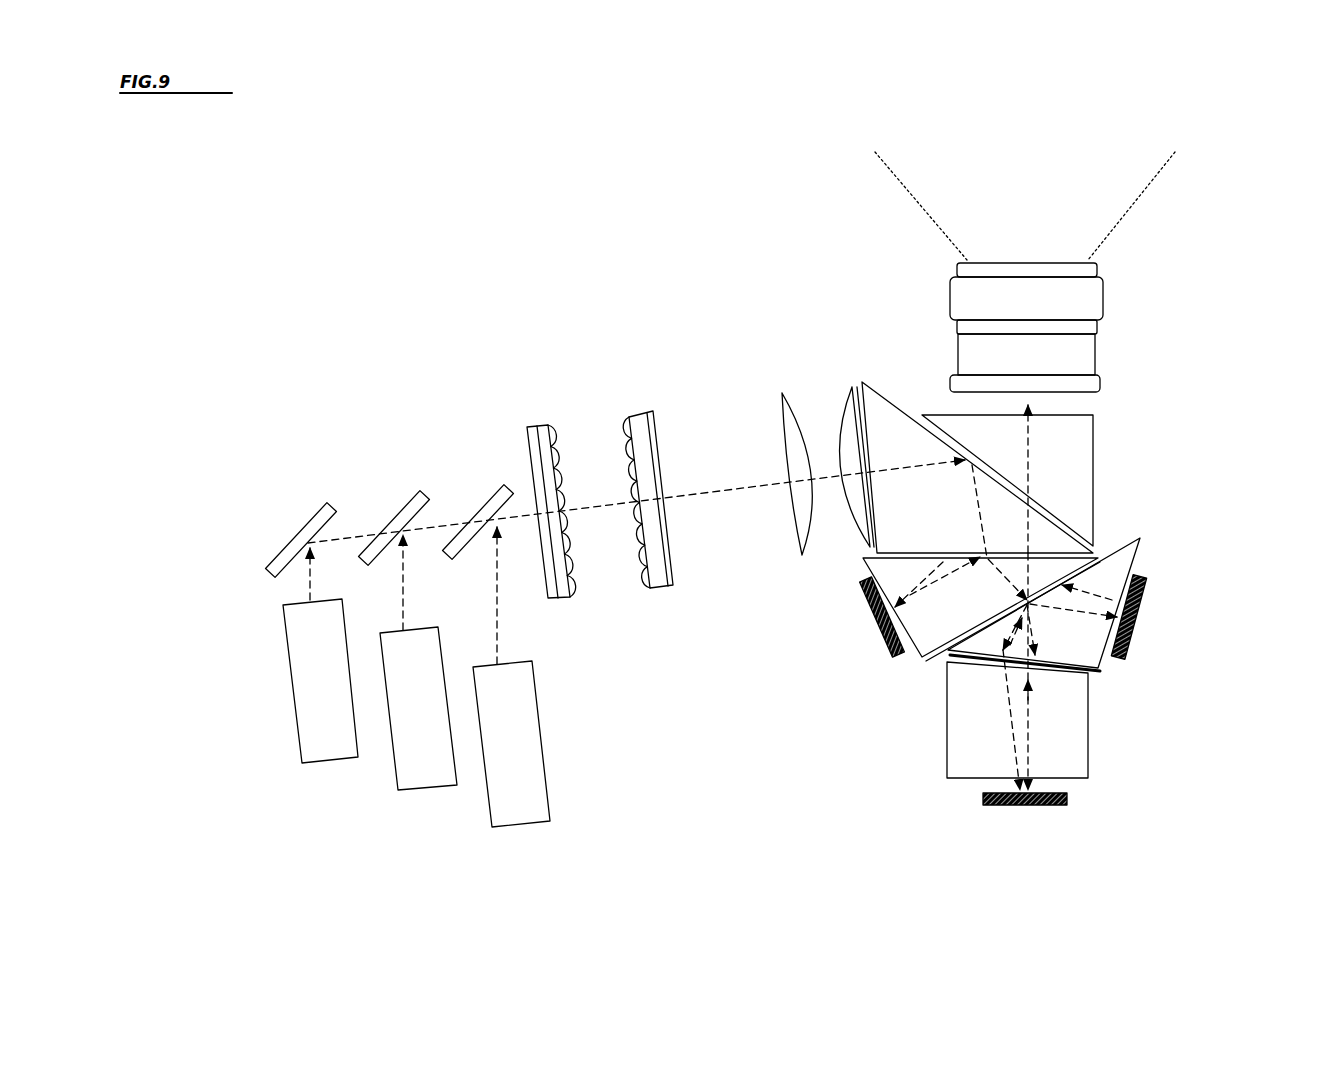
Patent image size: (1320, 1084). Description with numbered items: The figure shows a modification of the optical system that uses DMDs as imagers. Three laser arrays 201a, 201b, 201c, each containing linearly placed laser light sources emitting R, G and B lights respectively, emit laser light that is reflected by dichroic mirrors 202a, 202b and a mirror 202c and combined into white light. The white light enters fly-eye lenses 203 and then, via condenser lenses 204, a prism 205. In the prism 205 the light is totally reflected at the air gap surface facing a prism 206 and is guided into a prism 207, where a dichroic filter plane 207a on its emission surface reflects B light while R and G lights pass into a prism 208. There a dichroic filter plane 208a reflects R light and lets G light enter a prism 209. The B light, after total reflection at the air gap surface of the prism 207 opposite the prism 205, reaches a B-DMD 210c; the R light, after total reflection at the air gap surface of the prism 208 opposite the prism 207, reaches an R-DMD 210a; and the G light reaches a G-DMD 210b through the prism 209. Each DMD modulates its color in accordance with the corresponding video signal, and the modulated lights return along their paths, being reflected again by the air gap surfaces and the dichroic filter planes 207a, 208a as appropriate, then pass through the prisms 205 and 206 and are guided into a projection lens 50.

The projection lens 50 is at (1095, 298).
The laser array 201a is at (528, 815).
The laser array 201b is at (437, 782).
The laser array 201c is at (337, 757).
The dichroic mirror 202a is at (490, 490).
The dichroic mirror 202b is at (393, 500).
The mirror 202c is at (308, 513).
The fly-eye lenses 203 is at (653, 392).
The condenser lenses 204 is at (852, 372).
The prism 205 is at (893, 405).
The prism 206 is at (1078, 457).
The prism 207 is at (917, 657).
The dichroic filter plane 207a is at (933, 662).
The prism 208 is at (1132, 560).
The dichroic filter plane 208a is at (1095, 676).
The prism 209 is at (1085, 757).
The R-DMD 210a is at (1140, 625).
The G-DMD 210b is at (1000, 806).
The B-DMD 210c is at (860, 592).